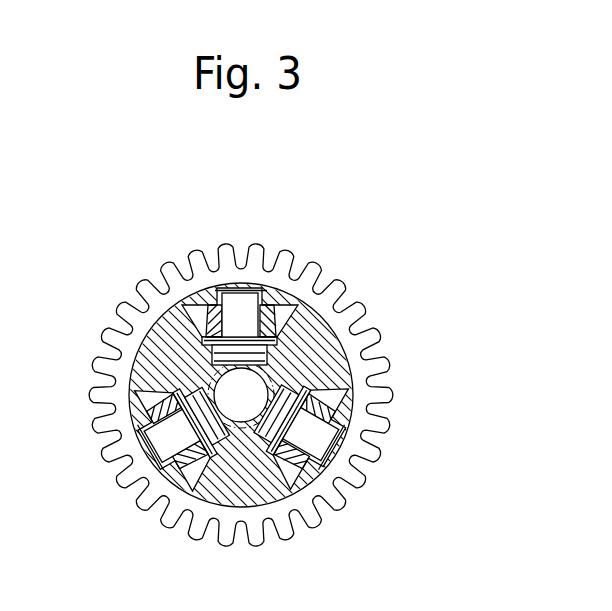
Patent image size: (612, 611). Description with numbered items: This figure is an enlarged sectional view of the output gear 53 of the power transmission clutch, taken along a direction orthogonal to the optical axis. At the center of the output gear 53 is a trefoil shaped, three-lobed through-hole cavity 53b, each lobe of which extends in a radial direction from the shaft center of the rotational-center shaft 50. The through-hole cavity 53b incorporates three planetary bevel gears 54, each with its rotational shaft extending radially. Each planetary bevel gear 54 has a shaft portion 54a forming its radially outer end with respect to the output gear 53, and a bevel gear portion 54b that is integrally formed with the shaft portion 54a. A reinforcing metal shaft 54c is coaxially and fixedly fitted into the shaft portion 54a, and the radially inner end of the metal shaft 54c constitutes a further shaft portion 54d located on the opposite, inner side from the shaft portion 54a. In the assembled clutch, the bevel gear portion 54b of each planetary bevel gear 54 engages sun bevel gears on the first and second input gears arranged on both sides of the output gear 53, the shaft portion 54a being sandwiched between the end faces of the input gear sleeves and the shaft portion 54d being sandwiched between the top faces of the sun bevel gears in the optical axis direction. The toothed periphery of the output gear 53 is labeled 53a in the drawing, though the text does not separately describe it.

The rotational-center shaft 50 is at (254, 372).
The output gear 53 is at (281, 247).
The gear teeth portion 53a is at (323, 318).
The through-hole cavity 53b is at (305, 362).
The planetary bevel gear 54 is at (262, 372).
The shaft portion 54a is at (205, 312).
The bevel gear portion 54b is at (187, 325).
The reinforcing metal shaft 54c is at (240, 307).
The shaft portion 54d is at (281, 342).